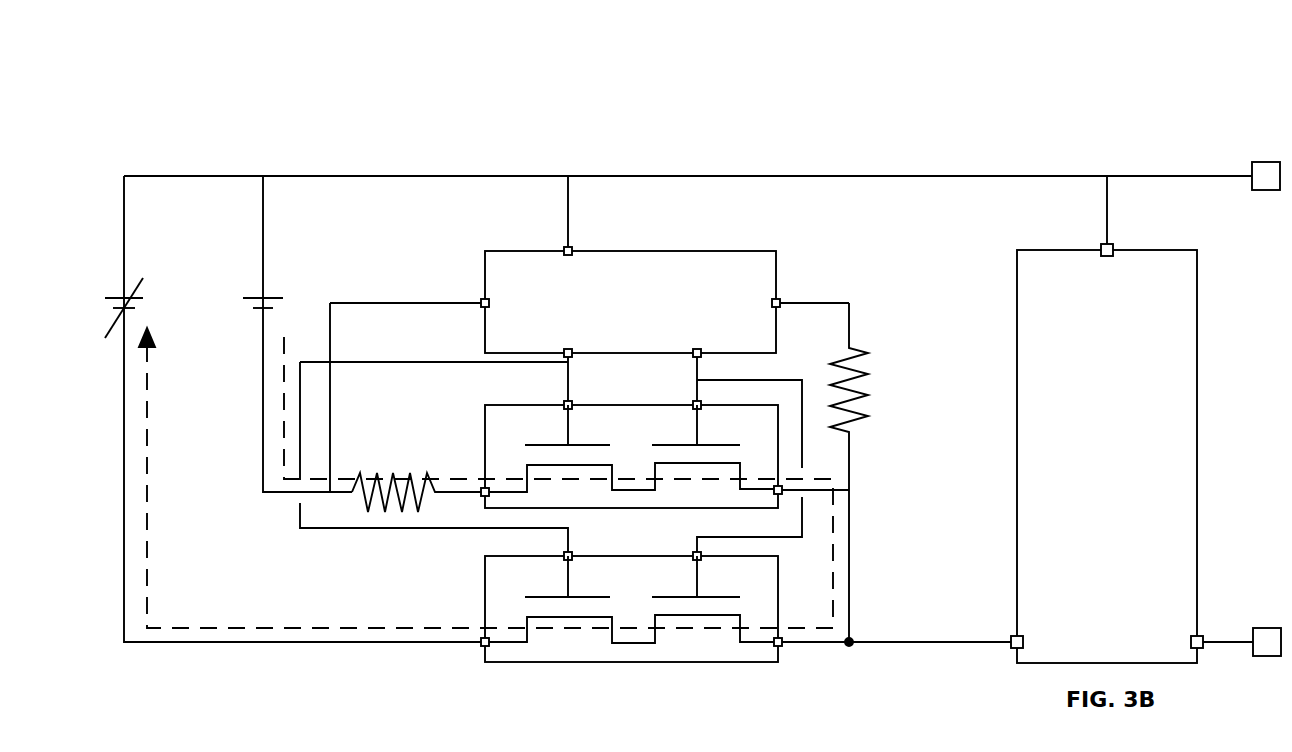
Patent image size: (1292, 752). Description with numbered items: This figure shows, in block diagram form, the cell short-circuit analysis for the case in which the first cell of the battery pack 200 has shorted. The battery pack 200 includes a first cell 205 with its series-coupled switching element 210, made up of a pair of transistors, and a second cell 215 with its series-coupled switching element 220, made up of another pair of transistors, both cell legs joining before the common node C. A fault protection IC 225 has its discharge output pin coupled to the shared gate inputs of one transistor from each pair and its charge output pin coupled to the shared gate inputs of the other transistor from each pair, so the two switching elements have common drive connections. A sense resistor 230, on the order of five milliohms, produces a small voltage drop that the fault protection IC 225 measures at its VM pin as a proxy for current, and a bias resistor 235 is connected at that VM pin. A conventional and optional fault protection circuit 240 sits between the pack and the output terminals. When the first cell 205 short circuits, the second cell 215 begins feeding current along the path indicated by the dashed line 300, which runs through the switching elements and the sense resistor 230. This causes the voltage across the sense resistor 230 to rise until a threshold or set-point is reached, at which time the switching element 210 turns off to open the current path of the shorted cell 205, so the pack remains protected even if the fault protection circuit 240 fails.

The battery pack 200 is at (342, 136).
The cell-1 205 is at (147, 268).
The cell-2 215 is at (280, 283).
The fault protection IC 225 is at (483, 249).
The switching element 220 is at (483, 403).
The sense resistor 230 is at (416, 474).
The bias resistor 235 is at (881, 492).
The switching element 210 is at (483, 556).
The fault protection circuit 240 is at (1015, 249).
The dashed line 300 is at (178, 626).